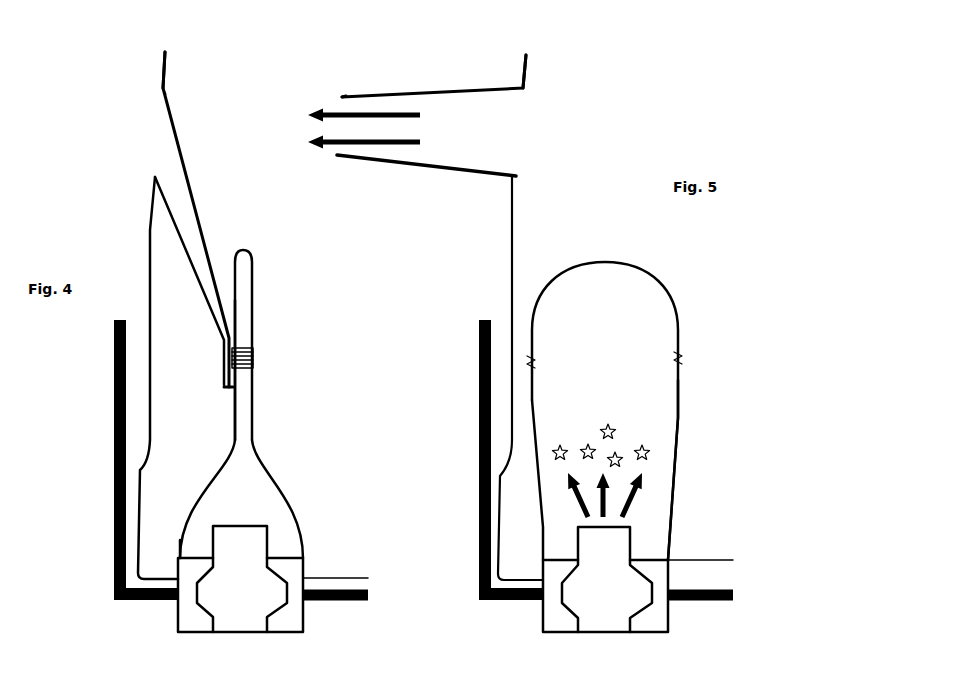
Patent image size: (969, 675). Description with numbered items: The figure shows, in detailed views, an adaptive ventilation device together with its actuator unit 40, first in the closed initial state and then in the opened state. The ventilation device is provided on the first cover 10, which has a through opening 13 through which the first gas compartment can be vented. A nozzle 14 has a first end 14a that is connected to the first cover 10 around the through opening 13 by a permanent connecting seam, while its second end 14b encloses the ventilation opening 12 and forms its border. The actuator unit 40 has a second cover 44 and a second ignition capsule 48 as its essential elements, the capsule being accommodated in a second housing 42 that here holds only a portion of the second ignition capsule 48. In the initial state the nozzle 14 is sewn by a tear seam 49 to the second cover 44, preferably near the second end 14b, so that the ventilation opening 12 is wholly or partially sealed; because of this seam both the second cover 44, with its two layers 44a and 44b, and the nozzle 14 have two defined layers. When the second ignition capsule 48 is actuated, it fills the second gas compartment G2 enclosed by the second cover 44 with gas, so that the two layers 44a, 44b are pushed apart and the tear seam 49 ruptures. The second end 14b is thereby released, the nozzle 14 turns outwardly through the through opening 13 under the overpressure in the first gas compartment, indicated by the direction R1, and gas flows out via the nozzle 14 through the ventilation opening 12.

In FIG. 4, the first cover 10 is at (150, 308).
In FIG. 5, the first cover 10 is at (530, 65).
In FIG. 5, the ventilation opening 12 is at (340, 97).
In FIG. 4, the through opening 13 is at (158, 149).
In FIG. 5, the through opening 13 is at (522, 135).
In FIG. 4, the nozzle 14 is at (197, 193).
In FIG. 5, the nozzle 14 is at (435, 167).
In FIG. 4, the first end of the nozzle 14a is at (174, 86).
In FIG. 5, the first end of the nozzle 14a is at (517, 80).
In FIG. 4, the second end of the nozzle 14b is at (214, 382).
In FIG. 5, the second end of the nozzle 14b is at (342, 86).
In FIG. 4, the actuator unit 40 is at (190, 612).
In FIG. 4, the second housing 42 is at (303, 622).
In FIG. 4, the second cover 44 is at (252, 433).
In FIG. 4, the first layer of the second cover 44a is at (232, 404).
In FIG. 5, the first layer of the second cover 44a is at (530, 407).
In FIG. 4, the second layer of the second cover 44b is at (250, 393).
In FIG. 5, the second layer of the second cover 44b is at (683, 410).
In FIG. 4, the second ignition capsule 48 is at (260, 538).
In FIG. 4, the tear seam 49 is at (250, 352).
In FIG. 4, the second gas compartment G2 is at (260, 512).
In FIG. 5, the second gas compartment G2 is at (635, 305).
In FIG. 4, the rotation direction R1 is at (328, 282).